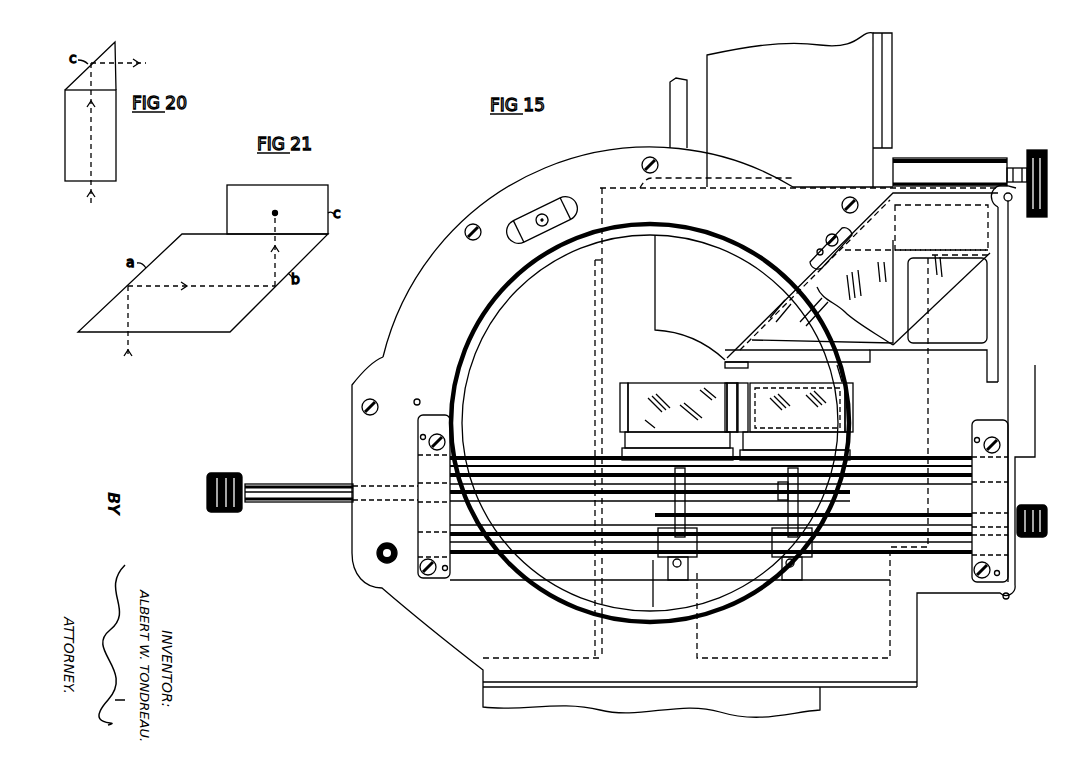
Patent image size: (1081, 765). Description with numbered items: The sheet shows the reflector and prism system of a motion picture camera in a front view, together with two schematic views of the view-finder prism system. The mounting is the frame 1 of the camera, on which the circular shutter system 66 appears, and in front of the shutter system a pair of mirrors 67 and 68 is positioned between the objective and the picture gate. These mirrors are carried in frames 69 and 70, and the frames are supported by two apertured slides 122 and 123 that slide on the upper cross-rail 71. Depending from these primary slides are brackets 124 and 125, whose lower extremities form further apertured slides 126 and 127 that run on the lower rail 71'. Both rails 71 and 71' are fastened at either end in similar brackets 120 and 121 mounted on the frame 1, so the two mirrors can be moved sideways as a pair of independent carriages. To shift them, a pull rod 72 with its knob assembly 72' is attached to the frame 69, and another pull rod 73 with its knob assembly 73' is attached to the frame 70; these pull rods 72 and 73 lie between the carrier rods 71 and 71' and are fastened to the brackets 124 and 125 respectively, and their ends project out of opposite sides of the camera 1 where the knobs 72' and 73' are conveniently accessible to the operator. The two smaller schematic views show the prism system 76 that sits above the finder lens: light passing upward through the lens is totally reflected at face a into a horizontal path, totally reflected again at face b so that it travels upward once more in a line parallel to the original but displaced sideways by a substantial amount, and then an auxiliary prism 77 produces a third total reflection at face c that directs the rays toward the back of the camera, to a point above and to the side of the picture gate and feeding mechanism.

In FIG. 15, the frame 1 is at (546, 172).
In FIG. 15, the shutter system 66 is at (536, 290).
In FIG. 15, the mirror 67 is at (787, 397).
In FIG. 15, the mirror 68 is at (658, 394).
In FIG. 15, the frame 69 is at (620, 413).
In FIG. 15, the frame 70 is at (852, 401).
In FIG. 15, the cross-rail 71 is at (711, 466).
In FIG. 15, the rail 71' is at (670, 572).
In FIG. 15, the pull rod 72 is at (711, 523).
In FIG. 15, the knob assembly 72' is at (1034, 508).
In FIG. 15, the pull rod 73 is at (331, 480).
In FIG. 15, the knob assembly 73' is at (224, 479).
In FIG. 20, the prism system 76 is at (74, 180).
In FIG. 21, the prism system 76 is at (196, 236).
In FIG. 20, the auxiliary prism 77 is at (78, 85).
In FIG. 21, the auxiliary prism 77 is at (306, 190).
In FIG. 15, the bracket 120 is at (422, 468).
In FIG. 15, the bracket 121 is at (979, 443).
In FIG. 15, the apertured slide 122 is at (603, 455).
In FIG. 15, the apertured slide 123 is at (795, 446).
In FIG. 15, the bracket 124 is at (675, 513).
In FIG. 15, the bracket 125 is at (798, 497).
In FIG. 15, the apertured slide 126 is at (658, 562).
In FIG. 15, the apertured slide 127 is at (772, 562).